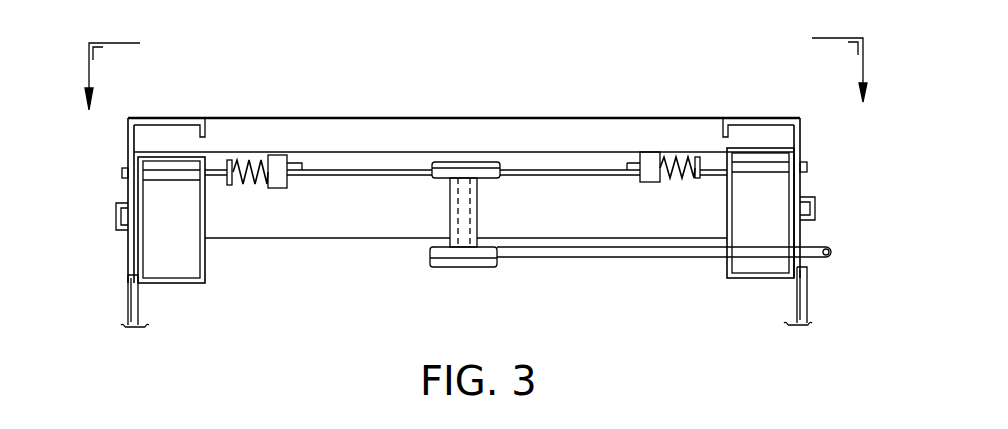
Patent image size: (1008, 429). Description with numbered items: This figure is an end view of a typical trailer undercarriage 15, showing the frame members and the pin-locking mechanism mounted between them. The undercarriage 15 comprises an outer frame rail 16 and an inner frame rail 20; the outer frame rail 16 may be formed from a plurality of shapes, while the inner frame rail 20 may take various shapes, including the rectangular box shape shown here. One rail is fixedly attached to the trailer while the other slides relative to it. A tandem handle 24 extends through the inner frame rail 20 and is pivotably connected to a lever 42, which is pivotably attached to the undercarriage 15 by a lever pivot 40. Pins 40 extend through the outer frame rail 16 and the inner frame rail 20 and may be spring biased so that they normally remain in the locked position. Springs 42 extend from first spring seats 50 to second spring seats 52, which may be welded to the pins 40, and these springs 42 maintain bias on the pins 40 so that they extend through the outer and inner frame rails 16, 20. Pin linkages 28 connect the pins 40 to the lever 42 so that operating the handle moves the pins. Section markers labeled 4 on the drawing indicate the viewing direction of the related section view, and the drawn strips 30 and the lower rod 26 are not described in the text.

The section line 4- 4 is at (476, 91).
The undercarriage 15 is at (612, 84).
The outer frame rail 16 is at (168, 118).
The inner frame rail 20 is at (137, 243).
The tandem handle 24 is at (832, 252).
The actuating rod 26 is at (562, 258).
The pin linkage 28 is at (556, 167).
The mounting strip 30 is at (130, 303).
The pin 40 is at (450, 217).
The spring 42 is at (245, 186).
The first spring seat 50 is at (282, 188).
The second spring seat 52 is at (225, 187).